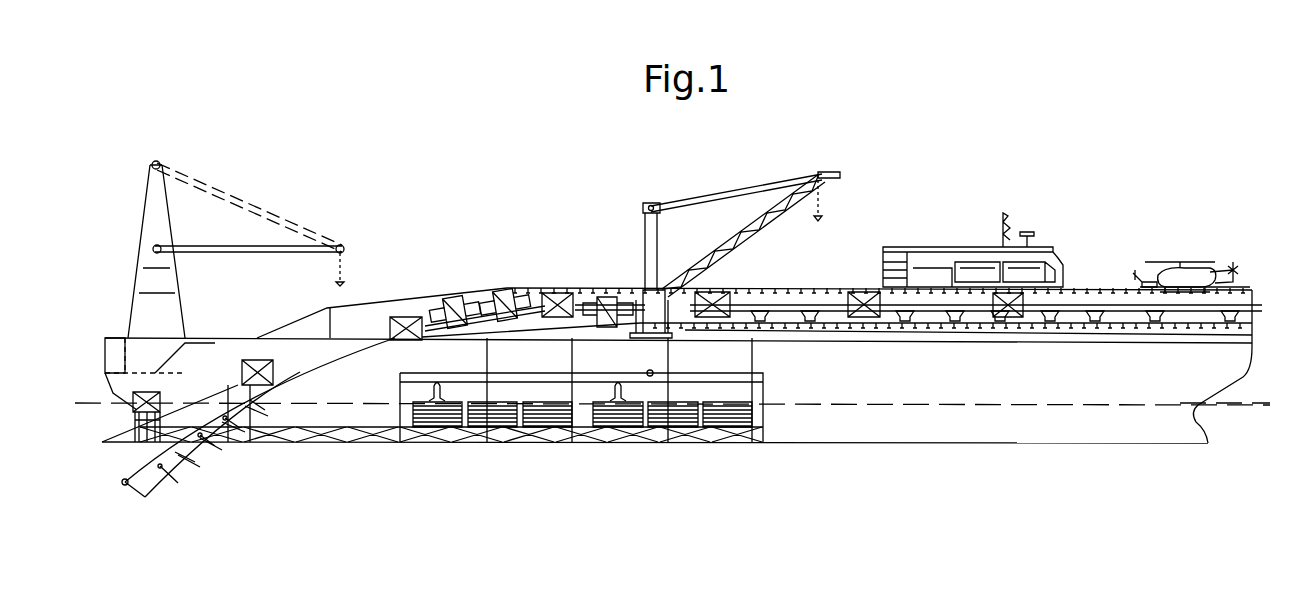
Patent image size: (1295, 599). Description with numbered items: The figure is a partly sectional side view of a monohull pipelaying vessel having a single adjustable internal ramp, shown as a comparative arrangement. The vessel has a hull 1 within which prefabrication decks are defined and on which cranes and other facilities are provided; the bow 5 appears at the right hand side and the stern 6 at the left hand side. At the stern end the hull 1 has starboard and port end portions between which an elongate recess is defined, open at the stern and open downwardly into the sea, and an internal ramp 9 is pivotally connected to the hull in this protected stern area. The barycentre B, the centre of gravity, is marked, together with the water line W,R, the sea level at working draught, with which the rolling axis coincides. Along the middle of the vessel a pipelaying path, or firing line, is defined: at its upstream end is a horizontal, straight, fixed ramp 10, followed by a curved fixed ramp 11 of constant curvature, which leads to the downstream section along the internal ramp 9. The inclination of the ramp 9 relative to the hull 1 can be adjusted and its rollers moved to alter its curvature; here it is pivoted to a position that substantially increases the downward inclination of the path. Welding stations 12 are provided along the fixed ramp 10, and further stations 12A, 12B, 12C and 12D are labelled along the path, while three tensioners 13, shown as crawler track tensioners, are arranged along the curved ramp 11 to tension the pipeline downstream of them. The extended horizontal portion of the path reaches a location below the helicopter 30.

The vessel hull 1 is at (1008, 388).
The bow 5 is at (1235, 380).
The stern 6 is at (103, 362).
The internal ramp 9 is at (193, 458).
The fixed ramp 10 is at (830, 308).
The curved ramp 11 is at (540, 290).
The welding station 12 is at (717, 293).
The pipe handling station 12A is at (558, 288).
The pipe handling station 12B is at (408, 317).
The pipe handling station 12C is at (247, 360).
The pipe handling station 12D is at (138, 392).
The tensioner 13 is at (510, 300).
The helicopter 30 is at (1185, 262).
The barycentre B is at (652, 378).
The water line and rolling axis W,R is at (1223, 410).